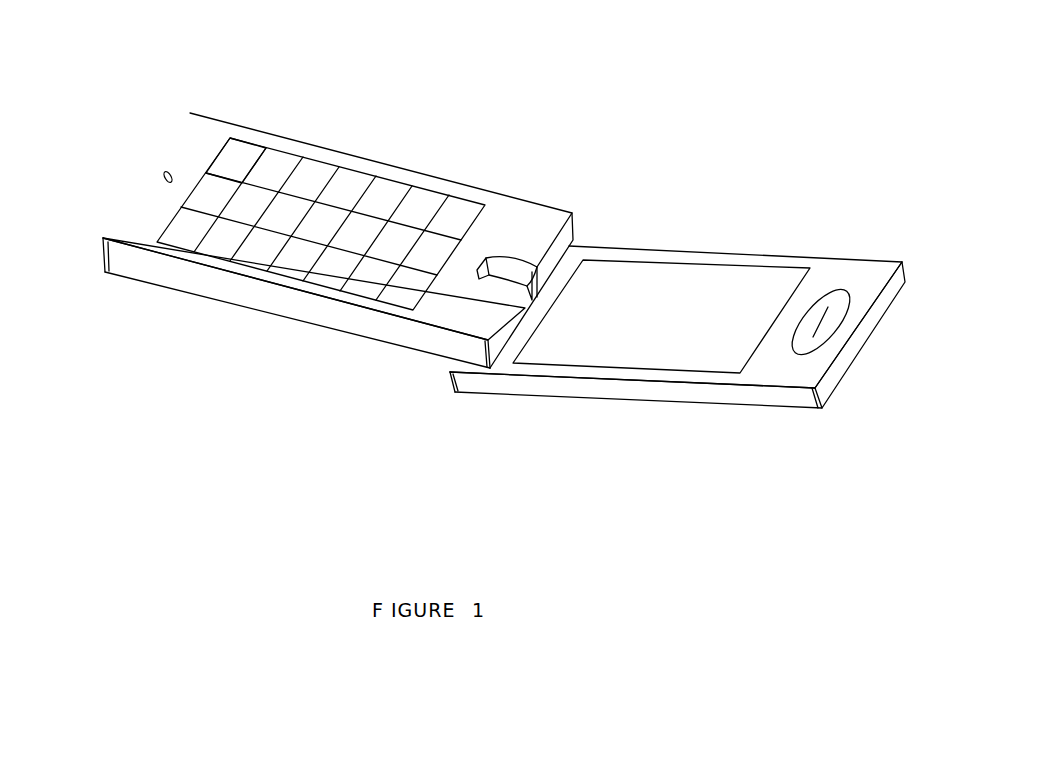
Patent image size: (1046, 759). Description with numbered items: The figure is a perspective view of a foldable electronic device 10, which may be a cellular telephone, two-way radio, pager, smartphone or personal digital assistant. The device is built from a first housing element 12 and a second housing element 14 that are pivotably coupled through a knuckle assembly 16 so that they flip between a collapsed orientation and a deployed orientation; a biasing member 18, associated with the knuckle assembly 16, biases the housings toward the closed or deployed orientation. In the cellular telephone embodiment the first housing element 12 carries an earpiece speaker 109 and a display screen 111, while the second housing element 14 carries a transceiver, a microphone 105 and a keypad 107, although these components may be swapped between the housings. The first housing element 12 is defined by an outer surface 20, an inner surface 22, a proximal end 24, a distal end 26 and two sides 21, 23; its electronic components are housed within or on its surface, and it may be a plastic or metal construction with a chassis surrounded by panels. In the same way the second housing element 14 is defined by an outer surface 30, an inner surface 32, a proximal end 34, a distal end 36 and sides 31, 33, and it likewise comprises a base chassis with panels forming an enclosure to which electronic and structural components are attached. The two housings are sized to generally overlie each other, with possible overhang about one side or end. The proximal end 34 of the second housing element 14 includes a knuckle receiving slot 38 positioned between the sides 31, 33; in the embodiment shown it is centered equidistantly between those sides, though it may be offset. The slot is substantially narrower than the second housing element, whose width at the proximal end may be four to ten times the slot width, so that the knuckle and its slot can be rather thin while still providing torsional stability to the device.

The foldable electronic device 10 is at (509, 49).
The first housing element 12 is at (706, 206).
The second housing element 14 is at (226, 69).
The knuckle assembly 16 is at (497, 287).
The biasing member 18 is at (529, 265).
The outer surface 20 is at (785, 412).
The side 21 is at (607, 392).
The inner surface 22 is at (878, 276).
The side 23 is at (720, 250).
The proximal end 24 is at (448, 376).
The distal end 26 is at (850, 358).
The outer surface 30 is at (158, 292).
The side 31 is at (252, 302).
The inner surface 32 is at (507, 217).
The side 33 is at (340, 156).
The proximal end 34 is at (567, 242).
The distal end 36 is at (121, 202).
The knuckle receiving slot 38 is at (487, 252).
The microphone 105 is at (168, 171).
The keypad 107 is at (270, 165).
The earpiece speaker 109 is at (846, 290).
The display screen 111 is at (562, 352).